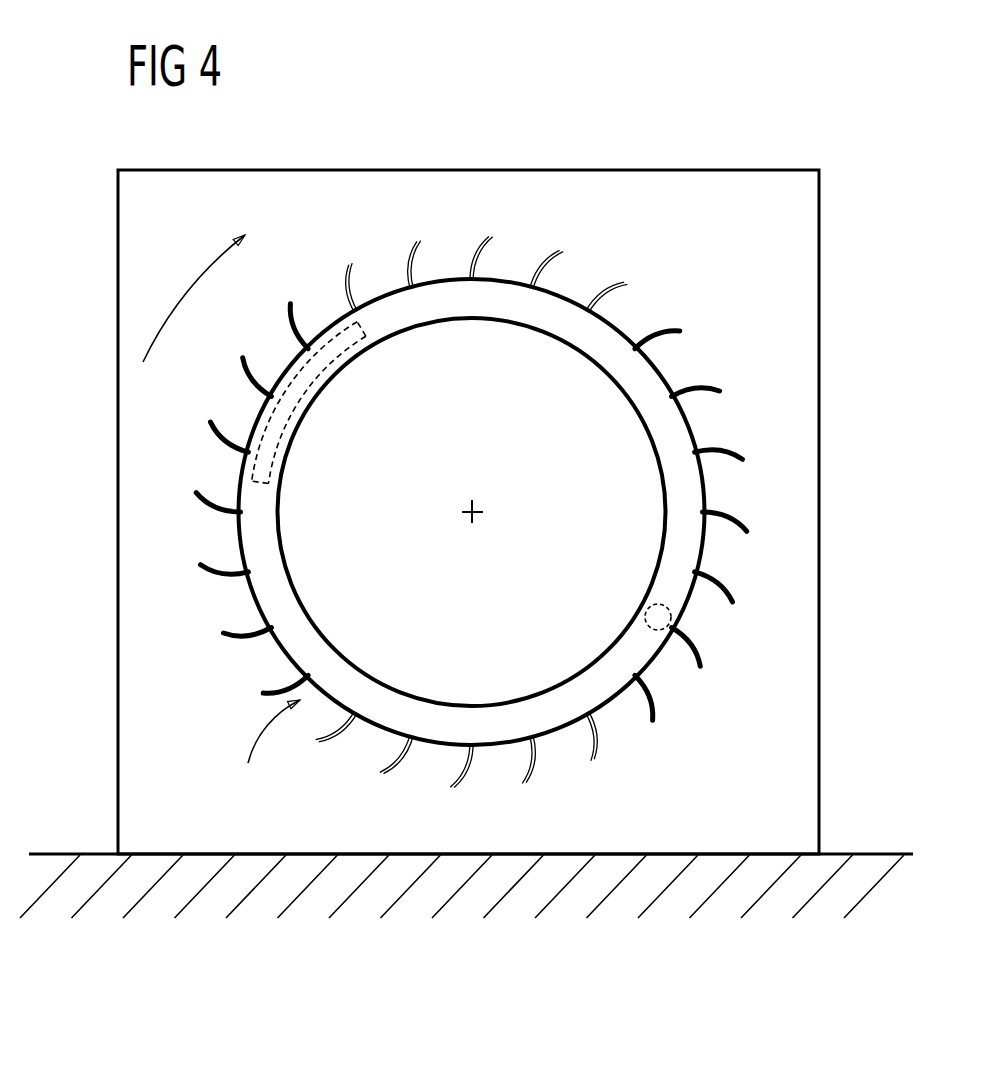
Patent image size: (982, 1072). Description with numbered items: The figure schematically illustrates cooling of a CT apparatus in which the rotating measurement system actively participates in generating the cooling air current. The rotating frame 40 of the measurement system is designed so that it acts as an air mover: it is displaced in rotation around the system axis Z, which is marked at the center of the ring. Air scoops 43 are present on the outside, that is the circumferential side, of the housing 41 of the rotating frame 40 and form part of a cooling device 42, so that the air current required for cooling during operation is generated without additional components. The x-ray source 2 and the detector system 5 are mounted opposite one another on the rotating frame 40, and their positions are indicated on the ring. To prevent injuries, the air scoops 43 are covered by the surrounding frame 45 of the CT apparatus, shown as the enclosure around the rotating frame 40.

The frame 45 is at (535, 205).
The rotating frame 40 is at (612, 338).
The housing 41 is at (708, 480).
The air scoops 43 is at (533, 767).
The detector system 5 is at (297, 373).
The x-ray source 2 is at (670, 613).
The cooling device 42 is at (256, 750).
The system axis Z is at (477, 507).